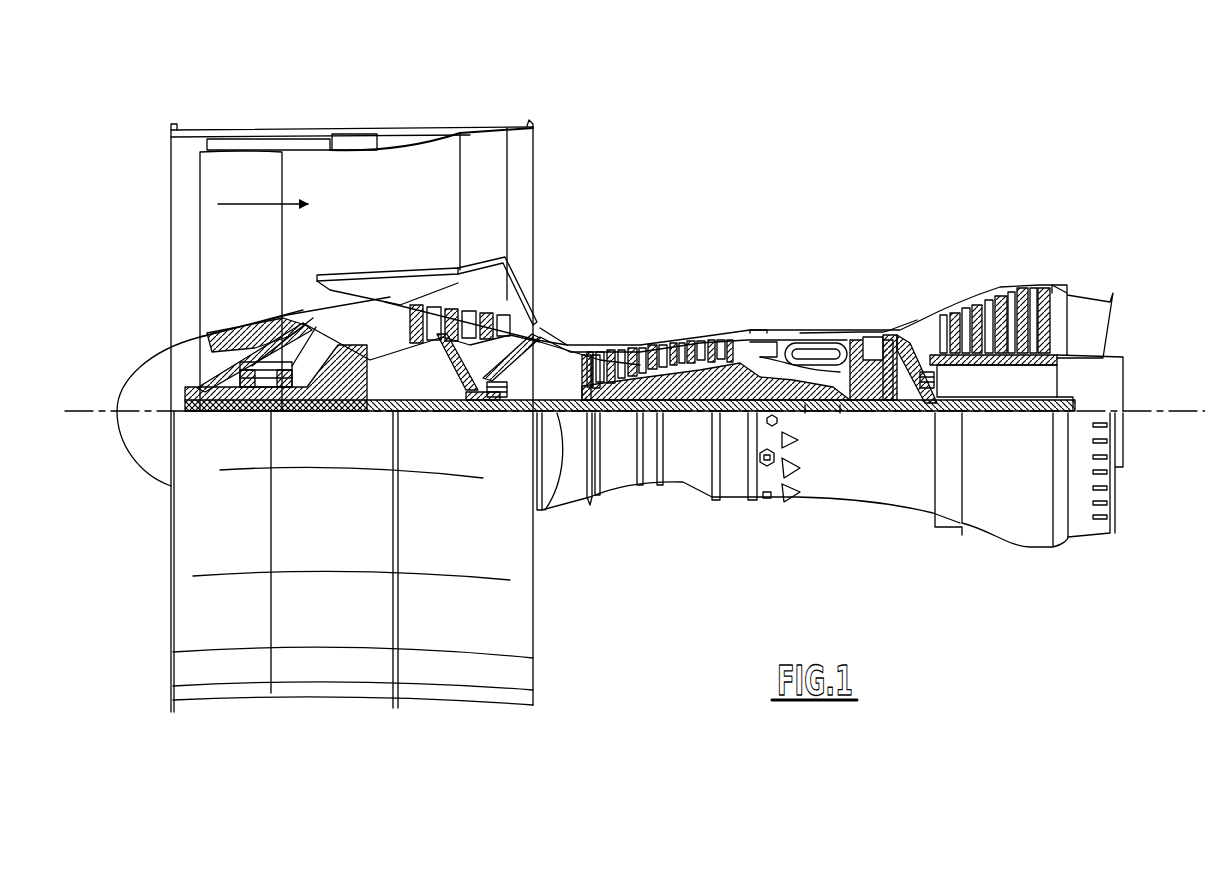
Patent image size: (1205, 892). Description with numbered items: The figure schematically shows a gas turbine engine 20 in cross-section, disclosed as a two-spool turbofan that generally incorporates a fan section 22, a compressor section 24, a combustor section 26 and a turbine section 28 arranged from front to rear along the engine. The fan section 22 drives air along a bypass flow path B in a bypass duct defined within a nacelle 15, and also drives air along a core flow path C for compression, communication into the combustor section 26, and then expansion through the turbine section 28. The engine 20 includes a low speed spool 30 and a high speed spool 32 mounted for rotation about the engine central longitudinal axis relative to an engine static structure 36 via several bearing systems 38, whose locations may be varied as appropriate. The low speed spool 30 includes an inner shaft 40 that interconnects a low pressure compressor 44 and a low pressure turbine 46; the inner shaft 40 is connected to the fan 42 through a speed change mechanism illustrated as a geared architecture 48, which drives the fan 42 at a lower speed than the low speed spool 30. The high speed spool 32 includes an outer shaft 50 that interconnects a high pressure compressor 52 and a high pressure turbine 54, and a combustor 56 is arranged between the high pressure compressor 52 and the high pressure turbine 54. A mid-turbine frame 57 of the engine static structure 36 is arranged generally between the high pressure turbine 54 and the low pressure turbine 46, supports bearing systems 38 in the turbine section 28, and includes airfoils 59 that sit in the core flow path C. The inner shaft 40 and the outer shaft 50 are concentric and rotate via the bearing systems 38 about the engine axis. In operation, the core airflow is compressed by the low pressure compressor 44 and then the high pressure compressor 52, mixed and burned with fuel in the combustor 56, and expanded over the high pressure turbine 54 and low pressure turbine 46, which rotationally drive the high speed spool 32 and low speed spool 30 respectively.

The gas turbine engine 20 is at (812, 178).
The fan section 22 is at (281, 118).
The nacelle 15 is at (355, 132).
The fan 42 is at (254, 254).
The bypass flow path B is at (258, 204).
The core flow path C is at (350, 312).
The low pressure compressor 44 is at (455, 320).
The compressor section 24 is at (584, 318).
The geared architecture 48 is at (362, 392).
The bearing systems 38 is at (491, 400).
The high pressure compressor 52 is at (670, 343).
The high speed spool 32 is at (730, 343).
The combustor section 26 is at (808, 305).
The combustor 56 is at (806, 352).
The high pressure turbine 54 is at (870, 330).
The mid-turbine frame 57 is at (912, 325).
The turbine section 28 is at (953, 272).
The low pressure turbine 46 is at (1000, 300).
The airfoils 59 is at (930, 347).
The outer shaft 50 is at (817, 411).
The inner shaft 40 is at (555, 420).
The low speed spool 30 is at (690, 420).
The engine static structure 36 is at (732, 503).